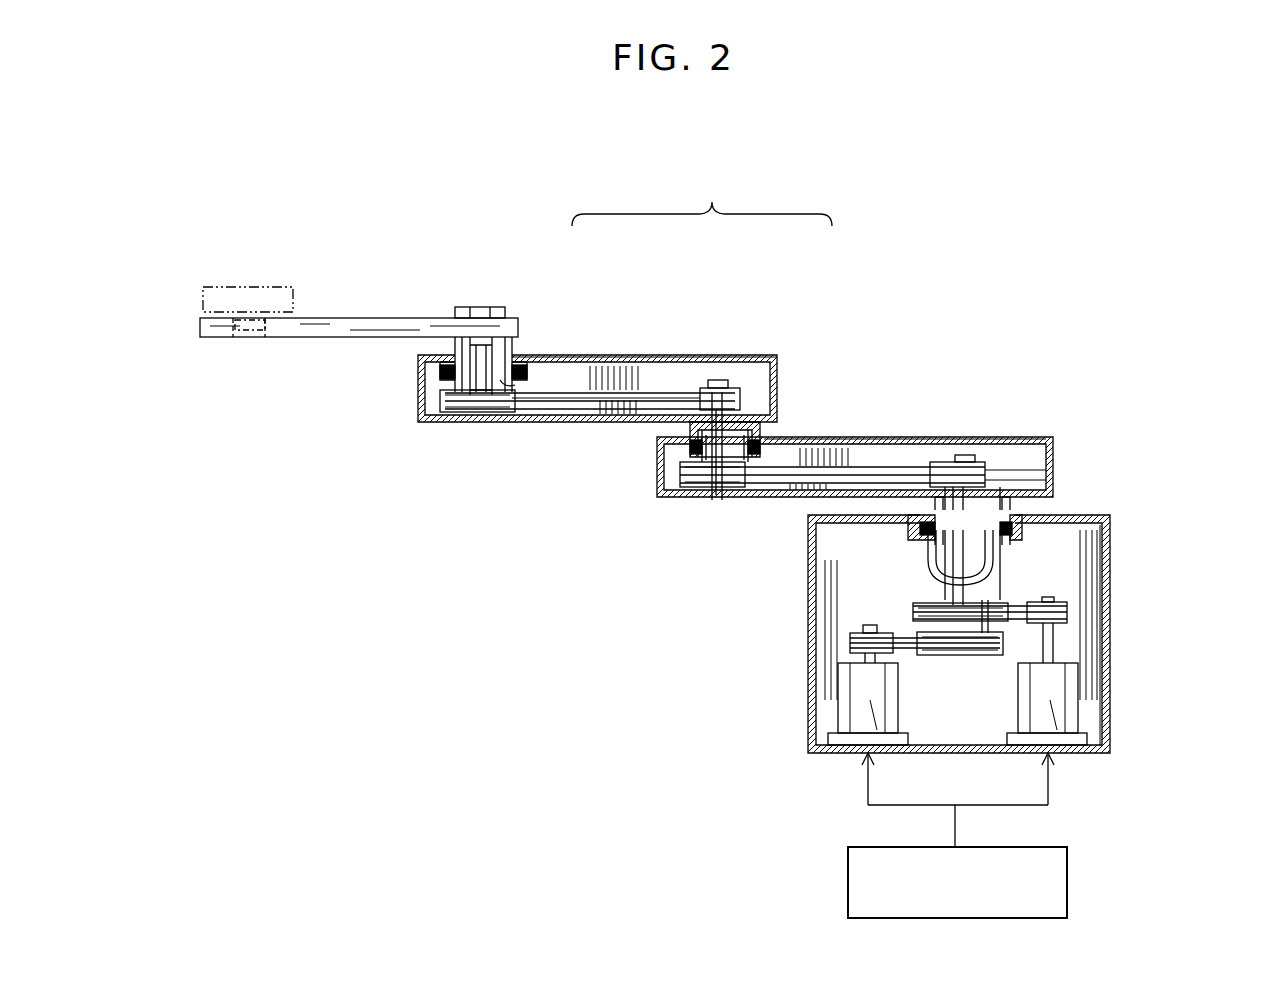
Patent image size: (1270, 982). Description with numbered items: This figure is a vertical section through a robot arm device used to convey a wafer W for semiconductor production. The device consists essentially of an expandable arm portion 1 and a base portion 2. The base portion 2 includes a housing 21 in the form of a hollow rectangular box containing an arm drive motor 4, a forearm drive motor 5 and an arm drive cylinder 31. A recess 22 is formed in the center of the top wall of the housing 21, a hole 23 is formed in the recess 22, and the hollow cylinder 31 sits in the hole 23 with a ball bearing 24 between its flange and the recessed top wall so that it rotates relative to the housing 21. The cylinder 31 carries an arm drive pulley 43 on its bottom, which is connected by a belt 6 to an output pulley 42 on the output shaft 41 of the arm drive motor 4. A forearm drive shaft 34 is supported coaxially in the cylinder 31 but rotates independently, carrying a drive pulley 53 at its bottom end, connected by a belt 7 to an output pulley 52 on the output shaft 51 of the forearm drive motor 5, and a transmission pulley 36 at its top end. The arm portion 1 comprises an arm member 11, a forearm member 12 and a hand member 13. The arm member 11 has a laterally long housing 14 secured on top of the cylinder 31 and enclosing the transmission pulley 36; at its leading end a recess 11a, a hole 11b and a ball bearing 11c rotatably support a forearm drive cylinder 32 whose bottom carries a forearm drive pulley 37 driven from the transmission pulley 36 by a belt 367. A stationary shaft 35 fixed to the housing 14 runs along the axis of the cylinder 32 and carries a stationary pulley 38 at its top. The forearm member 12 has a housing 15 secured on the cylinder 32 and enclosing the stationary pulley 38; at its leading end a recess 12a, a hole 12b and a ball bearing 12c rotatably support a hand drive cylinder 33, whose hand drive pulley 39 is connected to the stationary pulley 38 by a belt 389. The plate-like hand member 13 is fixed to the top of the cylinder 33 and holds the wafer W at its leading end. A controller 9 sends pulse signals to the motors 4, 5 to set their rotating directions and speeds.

The arm portion 1 is at (710, 205).
The wafer W is at (250, 287).
The hand member 13 is at (412, 321).
The forearm member 12 is at (640, 362).
The arm member 11 is at (880, 440).
The recess 12a is at (512, 372).
The hole 12b is at (516, 384).
The ball bearing 12c is at (520, 378).
The housing 15 is at (588, 360).
The hand drive cylinder 33 is at (442, 372).
The hand drive pulley 39 is at (465, 412).
The belt 389 is at (570, 408).
The stationary shaft 35 is at (652, 435).
The stationary pulley 38 is at (722, 388).
The forearm drive cylinder 32 is at (662, 468).
The housing 14 is at (970, 440).
The recess 11a is at (755, 452).
The hole 11b is at (757, 462).
The ball bearing 11c is at (660, 450).
The forearm drive pulley 37 is at (695, 490).
The belt 367 is at (905, 468).
The transmission pulley 36 is at (990, 468).
The forearm drive shaft 34 is at (1020, 493).
The recess 22 is at (1012, 510).
The arm drive cylinder 31 is at (880, 575).
The hole 23 is at (940, 560).
The ball bearing 24 is at (930, 530).
The base portion 2 is at (1108, 548).
The housing 21 is at (1107, 708).
The arm drive pulley 43 is at (1000, 603).
The belt 6 is at (1065, 605).
The output pulley 42 is at (1062, 600).
The output shaft 41 is at (1053, 645).
The arm drive motor 4 is at (1052, 748).
The drive pulley 53 is at (952, 660).
The belt 7 is at (900, 640).
The output pulley 52 is at (855, 633).
The output shaft 51 is at (868, 660).
The forearm drive motor 5 is at (876, 752).
The controller 9 is at (1070, 887).